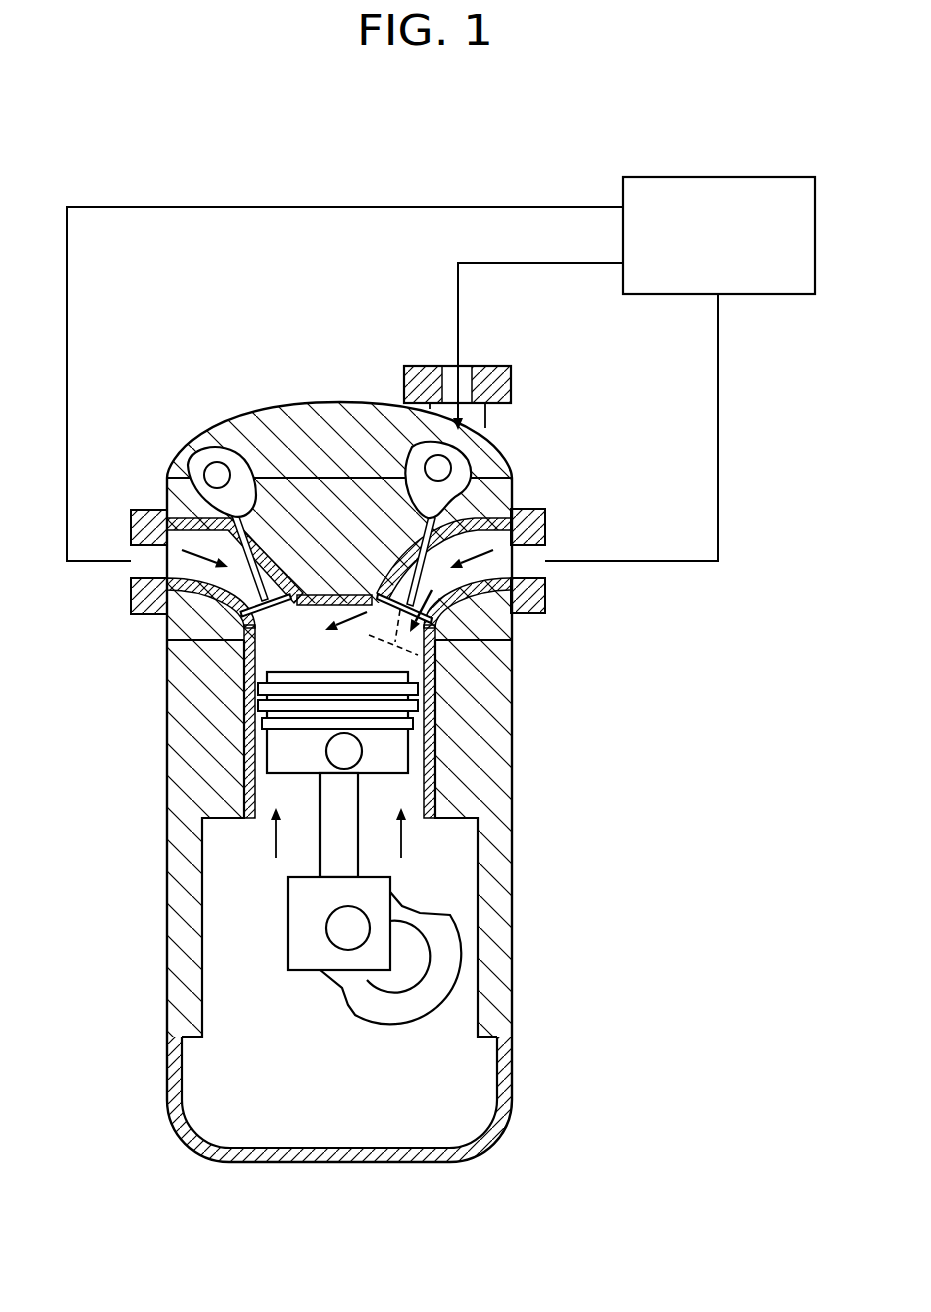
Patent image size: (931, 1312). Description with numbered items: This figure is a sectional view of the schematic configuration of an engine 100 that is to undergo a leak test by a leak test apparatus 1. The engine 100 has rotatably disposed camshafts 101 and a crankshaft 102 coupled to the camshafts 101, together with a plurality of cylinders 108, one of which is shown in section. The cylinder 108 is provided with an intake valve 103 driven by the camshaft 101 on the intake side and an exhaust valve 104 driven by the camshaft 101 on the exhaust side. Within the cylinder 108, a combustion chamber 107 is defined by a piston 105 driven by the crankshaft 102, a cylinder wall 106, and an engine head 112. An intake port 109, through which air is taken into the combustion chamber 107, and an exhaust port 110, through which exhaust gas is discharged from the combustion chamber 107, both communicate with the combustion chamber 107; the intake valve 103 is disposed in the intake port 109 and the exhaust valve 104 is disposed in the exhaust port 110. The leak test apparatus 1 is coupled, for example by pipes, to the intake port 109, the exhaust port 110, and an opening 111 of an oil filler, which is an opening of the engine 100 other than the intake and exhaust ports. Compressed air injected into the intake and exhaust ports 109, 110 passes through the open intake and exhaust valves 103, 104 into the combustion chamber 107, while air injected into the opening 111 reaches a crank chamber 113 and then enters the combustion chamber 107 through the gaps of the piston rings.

The leak test apparatus 1 is at (756, 177).
The engine 100 is at (197, 364).
The camshafts 101 is at (210, 470).
The crankshaft 102 is at (340, 932).
The intake valve 103 is at (282, 557).
The exhaust valve 104 is at (392, 513).
The piston 105 is at (397, 745).
The cylinder wall 106 is at (435, 785).
The combustion chamber 107 is at (280, 650).
The cylinder 108 is at (168, 878).
The intake port 109 is at (193, 540).
The exhaust port 110 is at (478, 537).
The opening of oil filler 111 is at (462, 366).
The engine head 112 is at (318, 590).
The crank chamber 113 is at (370, 1130).